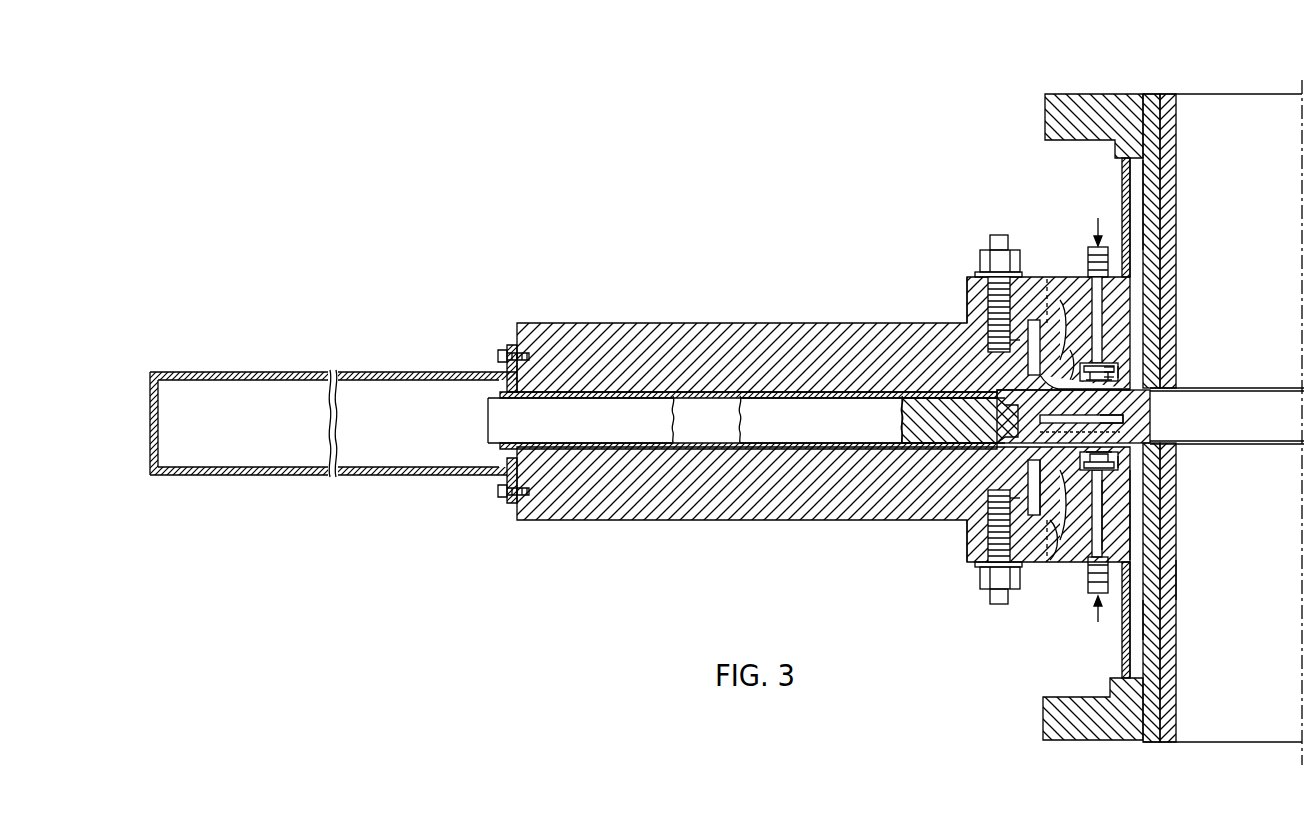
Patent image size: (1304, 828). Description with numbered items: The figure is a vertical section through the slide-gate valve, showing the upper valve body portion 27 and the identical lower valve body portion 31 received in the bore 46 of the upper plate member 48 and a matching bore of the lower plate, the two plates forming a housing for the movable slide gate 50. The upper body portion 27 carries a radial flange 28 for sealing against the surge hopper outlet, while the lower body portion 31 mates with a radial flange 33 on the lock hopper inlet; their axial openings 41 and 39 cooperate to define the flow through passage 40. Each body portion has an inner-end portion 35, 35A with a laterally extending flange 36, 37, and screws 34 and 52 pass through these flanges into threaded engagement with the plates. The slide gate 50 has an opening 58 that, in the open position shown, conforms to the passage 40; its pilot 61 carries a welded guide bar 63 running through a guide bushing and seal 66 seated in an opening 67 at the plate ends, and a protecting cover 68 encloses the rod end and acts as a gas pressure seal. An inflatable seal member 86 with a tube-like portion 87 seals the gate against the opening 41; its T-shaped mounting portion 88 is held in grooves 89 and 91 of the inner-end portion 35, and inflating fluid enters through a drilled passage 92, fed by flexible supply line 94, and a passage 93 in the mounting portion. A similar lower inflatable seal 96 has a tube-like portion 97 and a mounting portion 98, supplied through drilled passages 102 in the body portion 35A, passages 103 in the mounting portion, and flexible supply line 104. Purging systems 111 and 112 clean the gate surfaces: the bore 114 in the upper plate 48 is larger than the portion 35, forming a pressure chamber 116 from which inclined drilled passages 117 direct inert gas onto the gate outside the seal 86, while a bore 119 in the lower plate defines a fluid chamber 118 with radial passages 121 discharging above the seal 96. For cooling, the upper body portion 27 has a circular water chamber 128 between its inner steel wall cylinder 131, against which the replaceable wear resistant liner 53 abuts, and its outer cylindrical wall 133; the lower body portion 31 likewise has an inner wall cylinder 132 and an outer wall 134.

The radial flange 28 is at (1045, 104).
The axial opening 41 is at (1164, 93).
The flow through passage 40 is at (1250, 110).
The upper valve body portion 27 is at (1104, 178).
The circular water chamber 128 is at (1147, 178).
The outer cylindrical wall 133 is at (1122, 197).
The inner steel wall cylinder 131 is at (1155, 206).
The wear resistant liner 53 is at (1172, 239).
The screws 34 is at (988, 243).
The flexible supply line 94 is at (1096, 248).
The radial flange 36 is at (972, 280).
The inner-end portion 35 is at (1090, 300).
The bore 46 is at (1078, 292).
The bore 114 is at (1022, 325).
The upper plate member 48 is at (683, 326).
The pressure chamber 116 is at (1000, 343).
The drilled passages 117 is at (1073, 330).
The circular groove 89 is at (1073, 354).
The drilled passage 92 is at (1112, 322).
The circular flanged mounting portion 88 is at (1118, 342).
The circular groove 91 is at (1120, 360).
The inflatable seal member 86 is at (1124, 372).
The opening 58 is at (1140, 382).
The purging system 111 is at (1036, 377).
The guide bushing and seal 66 is at (565, 406).
The opening 67 is at (588, 404).
The protecting cover 68 is at (358, 372).
The guide bar 63 is at (490, 412).
The pilot 61 is at (959, 419).
The inflatable tube-like portion 87 is at (1081, 406).
The fluid passage 93 is at (1115, 406).
The slide gate 50 is at (1155, 419).
The inflatable tube-like portion 97 is at (1080, 434).
The purging system 112 is at (1012, 480).
The radial-drilled passages 121 is at (1005, 487).
The inflatable seal 96 is at (1143, 467).
The fluid chamber 118 is at (1000, 498).
The circular flange mounting portion 98 is at (1072, 505).
The fluid passages 103 is at (1140, 496).
The drilled passages 102 is at (1104, 524).
The radial flange 37 is at (970, 540).
The bore 119 is at (1034, 540).
The screws 52 is at (986, 593).
The inner-end portion 35A is at (1080, 560).
The flexible fluid supply line 104 is at (1092, 602).
The lower valve body portion 31 is at (1122, 642).
The inner steel wall cylinder 132 is at (1150, 623).
The outer cylindrical wall 134 is at (1130, 661).
The radial flange 33 is at (1045, 706).
The axial opening 39 is at (1164, 743).